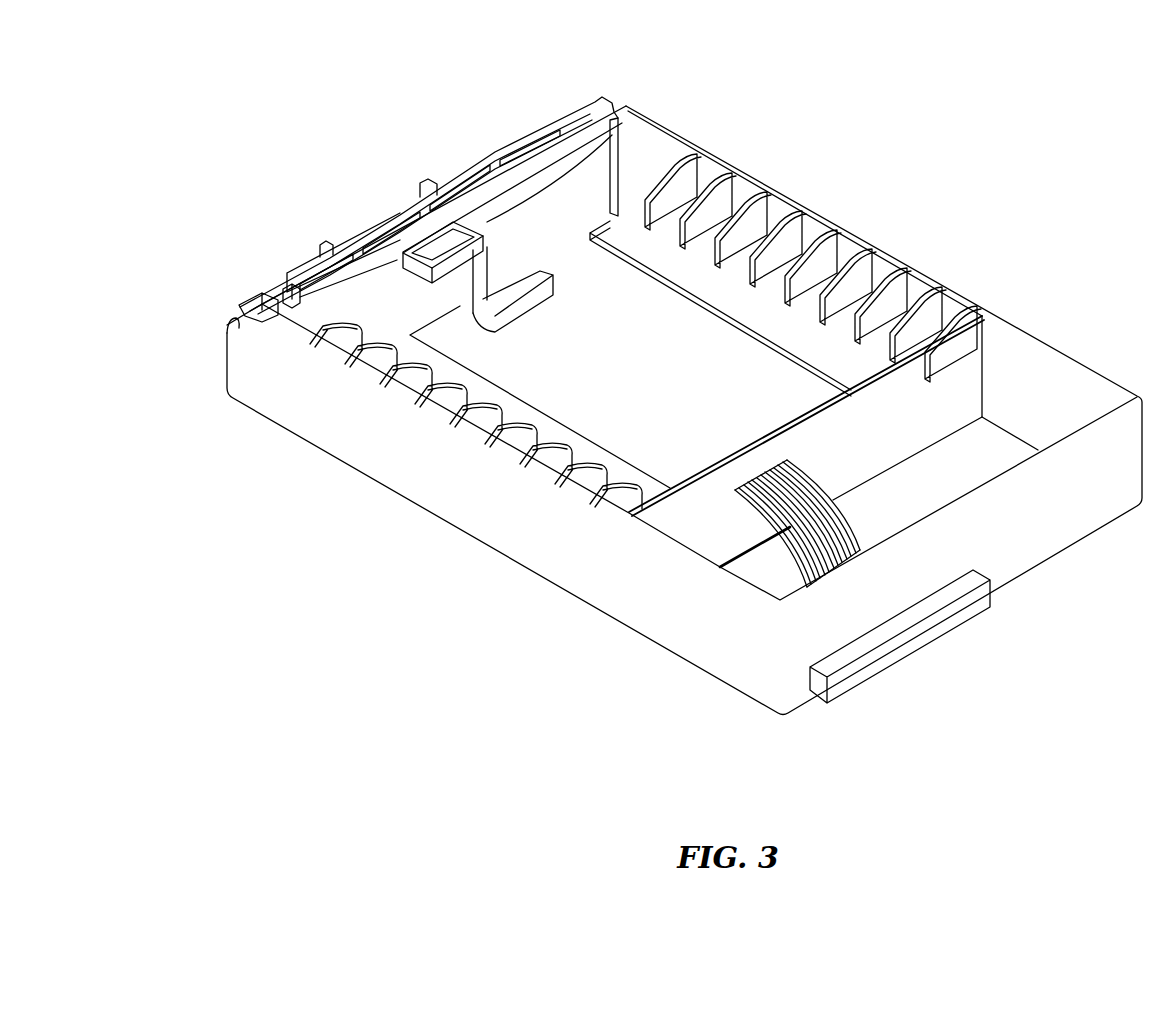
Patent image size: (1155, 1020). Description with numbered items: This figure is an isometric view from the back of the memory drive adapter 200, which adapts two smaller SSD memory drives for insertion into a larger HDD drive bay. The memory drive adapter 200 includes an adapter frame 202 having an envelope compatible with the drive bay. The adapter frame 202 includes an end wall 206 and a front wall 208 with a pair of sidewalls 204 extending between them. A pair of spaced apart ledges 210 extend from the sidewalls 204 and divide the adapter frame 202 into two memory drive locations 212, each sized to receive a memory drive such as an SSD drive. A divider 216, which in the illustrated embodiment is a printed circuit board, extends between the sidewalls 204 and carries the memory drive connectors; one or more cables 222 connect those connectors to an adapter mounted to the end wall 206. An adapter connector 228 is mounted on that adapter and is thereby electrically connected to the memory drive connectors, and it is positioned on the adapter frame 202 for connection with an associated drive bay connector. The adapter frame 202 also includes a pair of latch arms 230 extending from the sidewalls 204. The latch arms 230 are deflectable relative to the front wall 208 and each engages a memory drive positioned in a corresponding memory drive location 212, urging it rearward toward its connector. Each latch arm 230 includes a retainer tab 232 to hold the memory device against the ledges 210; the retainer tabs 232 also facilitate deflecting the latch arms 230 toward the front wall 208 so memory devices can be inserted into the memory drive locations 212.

The memory drive adapter 200 is at (938, 192).
The adapter frame 202 is at (392, 488).
The sidewalls 204 is at (487, 502).
The end wall 206 is at (1040, 515).
The front wall 208 is at (515, 140).
The ledges 210 is at (580, 432).
The memory drive locations 212 is at (713, 279).
The divider 216 is at (960, 388).
The cables 222 is at (795, 545).
The adapter connector 228 is at (890, 670).
The latch arms 230 is at (363, 313).
The retainer tabs 232 is at (417, 265).